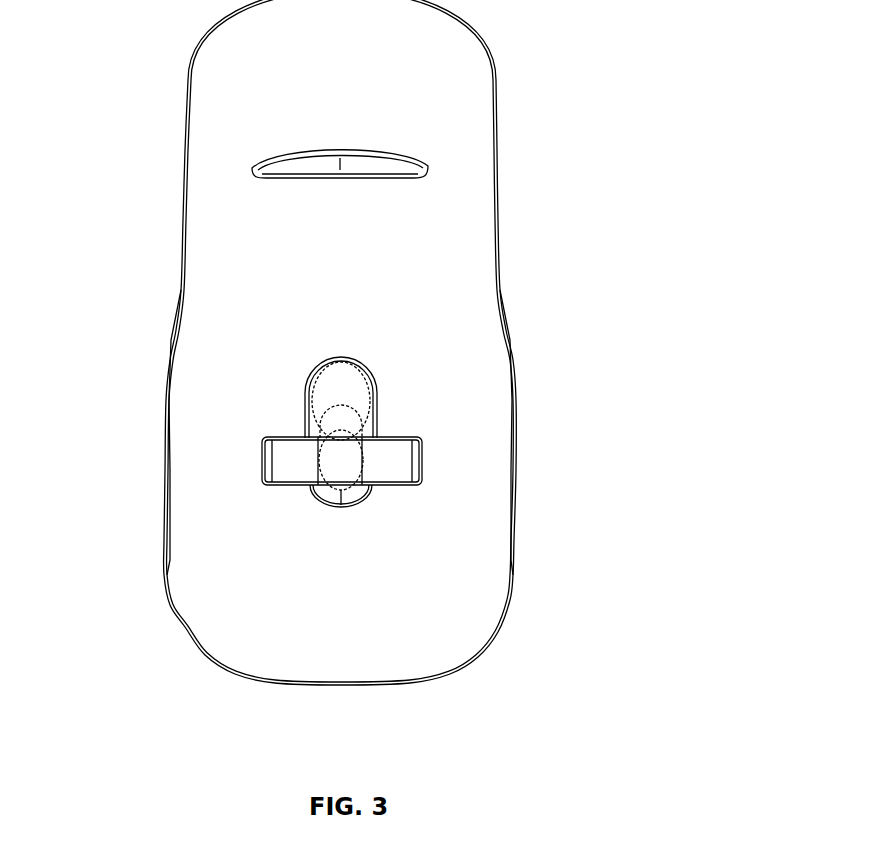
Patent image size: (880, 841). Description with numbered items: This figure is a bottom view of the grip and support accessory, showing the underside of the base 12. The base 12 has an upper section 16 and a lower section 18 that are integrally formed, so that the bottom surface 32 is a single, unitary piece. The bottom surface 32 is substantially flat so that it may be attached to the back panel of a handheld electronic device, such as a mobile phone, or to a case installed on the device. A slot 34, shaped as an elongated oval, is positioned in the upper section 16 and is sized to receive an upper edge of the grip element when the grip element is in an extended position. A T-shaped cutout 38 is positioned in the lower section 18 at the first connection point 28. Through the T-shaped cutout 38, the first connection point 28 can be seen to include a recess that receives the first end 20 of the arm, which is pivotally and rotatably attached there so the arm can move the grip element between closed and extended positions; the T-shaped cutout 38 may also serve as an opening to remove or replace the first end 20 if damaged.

The base 12 is at (604, 302).
The upper section 16 is at (187, 78).
The lower section 18 is at (184, 627).
The first end 20 is at (336, 454).
The first connection point 28 is at (414, 455).
The bottom surface 32 is at (449, 82).
The slot 34 is at (431, 161).
The T-shaped cutout 38 is at (302, 392).